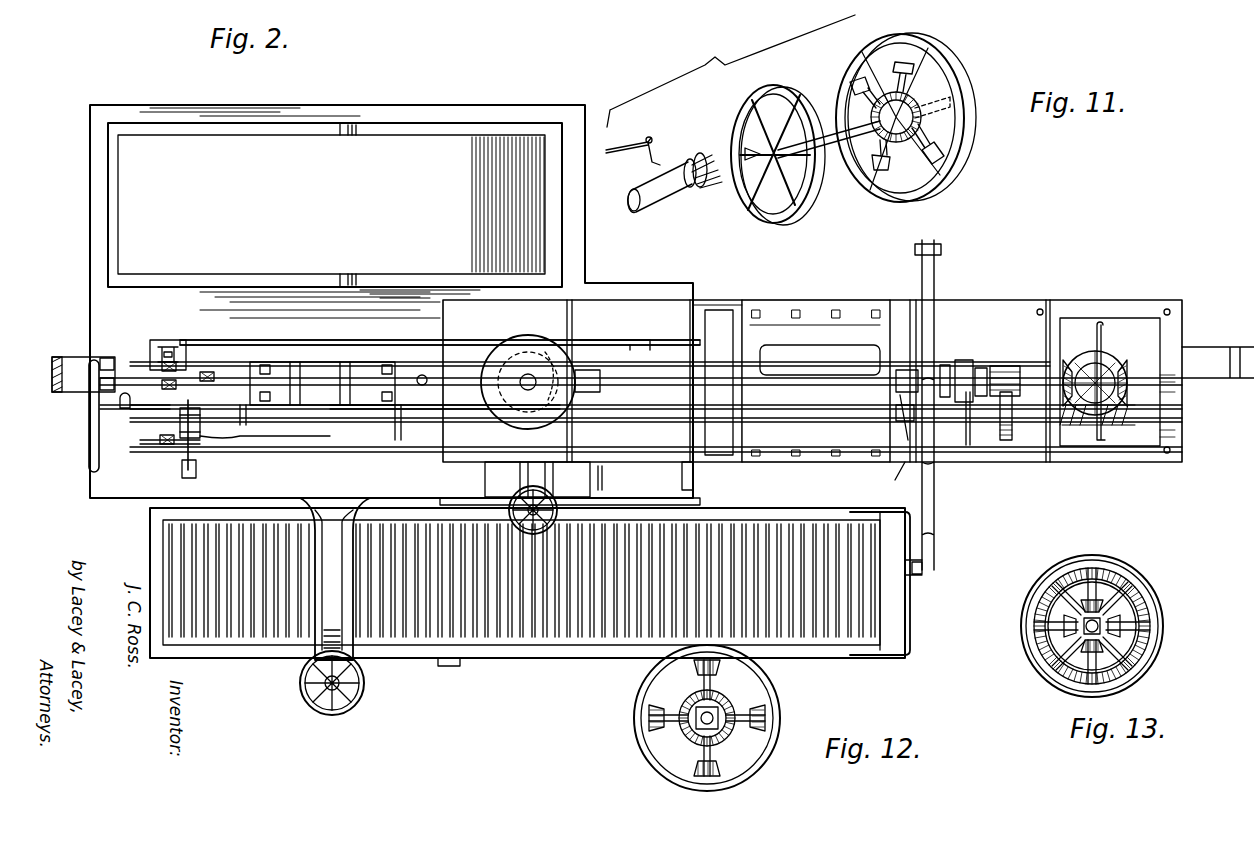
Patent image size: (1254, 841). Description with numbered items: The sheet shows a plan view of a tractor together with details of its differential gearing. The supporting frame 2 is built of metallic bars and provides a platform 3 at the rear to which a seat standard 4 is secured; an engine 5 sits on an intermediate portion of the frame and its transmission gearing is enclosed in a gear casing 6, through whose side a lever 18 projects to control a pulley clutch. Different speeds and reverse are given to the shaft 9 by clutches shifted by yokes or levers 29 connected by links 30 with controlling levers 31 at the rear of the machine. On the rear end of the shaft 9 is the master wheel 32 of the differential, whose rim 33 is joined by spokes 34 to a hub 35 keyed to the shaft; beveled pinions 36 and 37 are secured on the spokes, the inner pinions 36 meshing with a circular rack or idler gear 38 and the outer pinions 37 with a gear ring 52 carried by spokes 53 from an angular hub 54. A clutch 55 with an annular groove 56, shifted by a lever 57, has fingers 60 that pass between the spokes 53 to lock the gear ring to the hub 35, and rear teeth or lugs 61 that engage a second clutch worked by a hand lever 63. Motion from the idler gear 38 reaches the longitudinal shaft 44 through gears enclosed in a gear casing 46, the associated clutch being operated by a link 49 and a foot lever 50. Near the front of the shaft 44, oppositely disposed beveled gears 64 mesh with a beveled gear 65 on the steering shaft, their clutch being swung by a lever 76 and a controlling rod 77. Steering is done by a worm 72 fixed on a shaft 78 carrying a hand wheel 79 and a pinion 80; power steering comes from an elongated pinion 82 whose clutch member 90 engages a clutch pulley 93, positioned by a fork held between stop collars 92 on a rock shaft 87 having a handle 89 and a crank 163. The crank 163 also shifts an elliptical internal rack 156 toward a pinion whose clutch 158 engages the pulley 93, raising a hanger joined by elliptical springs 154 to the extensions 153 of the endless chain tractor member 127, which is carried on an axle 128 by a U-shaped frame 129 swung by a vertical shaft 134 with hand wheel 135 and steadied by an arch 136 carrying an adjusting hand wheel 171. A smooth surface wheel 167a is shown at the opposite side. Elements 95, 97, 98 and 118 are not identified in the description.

In FIG. 2, the supporting frame 2 is at (1096, 315).
In FIG. 2, the platform 3 is at (320, 313).
In FIG. 2, the seat standard 4 is at (76, 360).
In FIG. 2, the engine 5 is at (793, 372).
In FIG. 2, the gear casing 6 is at (512, 458).
In FIG. 11, the shaft 9 is at (962, 104).
In FIG. 12, the shaft 9 is at (690, 735).
In FIG. 13, the shaft 9 is at (1078, 632).
In FIG. 2, the lever 18 is at (606, 484).
In FIG. 2, the yokes or levers 29 is at (604, 350).
In FIG. 2, the links 30 is at (356, 358).
In FIG. 2, the controlling levers 31 is at (160, 355).
In FIG. 11, the master wheel 32 is at (952, 84).
In FIG. 11, the rim 33 is at (952, 158).
In FIG. 12, the rim 33 is at (736, 700).
In FIG. 13, the rim 33 is at (1050, 682).
In FIG. 11, the spokes or radial arms 34 is at (935, 142).
In FIG. 12, the spokes or radial arms 34 is at (716, 690).
In FIG. 13, the spokes or radial arms 34 is at (1126, 600).
In FIG. 11, the hub 35 is at (880, 130).
In FIG. 12, the hub 35 is at (740, 712).
In FIG. 11, the beveled pinions 36 is at (882, 172).
In FIG. 12, the beveled pinions 36 is at (700, 694).
In FIG. 13, the beveled pinions 36 is at (1084, 604).
In FIG. 11, the beveled pinions 37 is at (910, 152).
In FIG. 12, the beveled pinions 37 is at (700, 666).
In FIG. 13, the beveled pinions 37 is at (1100, 598).
In FIG. 11, the circular rack or idler gear 38 is at (910, 110).
In FIG. 12, the circular rack or idler gear 38 is at (735, 742).
In FIG. 2, the shaft 44 is at (815, 383).
In FIG. 2, the gear casing 46 is at (521, 346).
In FIG. 2, the link 49 is at (322, 383).
In FIG. 2, the foot lever 50 is at (178, 392).
In FIG. 11, the gear ring or circular rack 52 is at (778, 166).
In FIG. 13, the gear ring or circular rack 52 is at (1160, 650).
In FIG. 11, the spokes 53 is at (775, 128).
In FIG. 13, the spokes 53 is at (1128, 620).
In FIG. 11, the hub 54 is at (748, 165).
In FIG. 11, the clutch 55 is at (662, 197).
In FIG. 11, the annular groove 56 is at (634, 135).
In FIG. 11, the shifting lever 57 is at (646, 148).
In FIG. 11, the fingers 60 is at (690, 168).
In FIG. 11, the teeth or lugs 61 is at (630, 212).
In FIG. 2, the hand lever 63 is at (428, 378).
In FIG. 2, the beveled gears 64 is at (1064, 365).
In FIG. 2, the beveled gear 65 is at (1112, 352).
In FIG. 2, the worm 72 is at (1112, 433).
In FIG. 2, the lever 76 is at (1105, 440).
In FIG. 2, the controlling rod 77 is at (1004, 442).
In FIG. 2, the shaft 78 is at (346, 428).
In FIG. 2, the hand wheel 79 is at (88, 427).
In FIG. 2, the pinion 80 is at (1010, 432).
In FIG. 2, the elongated pinion 82 is at (1008, 370).
In FIG. 2, the rock shaft 87 is at (406, 425).
In FIG. 2, the handle 89 is at (118, 400).
In FIG. 2, the clutch member 90 is at (995, 366).
In FIG. 2, the stop collars 92 is at (967, 448).
In FIG. 2, the clutch pulley 93 is at (963, 360).
In FIG. 2, the lever 95 is at (188, 448).
In FIG. 2, the link 97 is at (290, 425).
In FIG. 2, the rod 98 is at (214, 440).
In FIG. 2, the handle 118 is at (100, 372).
In FIG. 2, the endless belt tractor member 127 is at (582, 650).
In FIG. 2, the axle 128 is at (450, 668).
In FIG. 2, the U-shaped frame 129 is at (232, 660).
In FIG. 2, the shaft 134 is at (560, 509).
In FIG. 2, the hand wheel 135 is at (510, 505).
In FIG. 2, the arch 136 is at (320, 598).
In FIG. 2, the extensions 153 is at (890, 656).
In FIG. 2, the elliptical springs 154 is at (936, 545).
In FIG. 2, the elliptical internal rack 156 is at (895, 399).
In FIG. 2, the clutch 158 is at (945, 365).
In FIG. 2, the crank 163 is at (906, 466).
In FIG. 2, the smooth surface wheel 167a is at (335, 203).
In FIG. 2, the hand wheel 171 is at (366, 694).